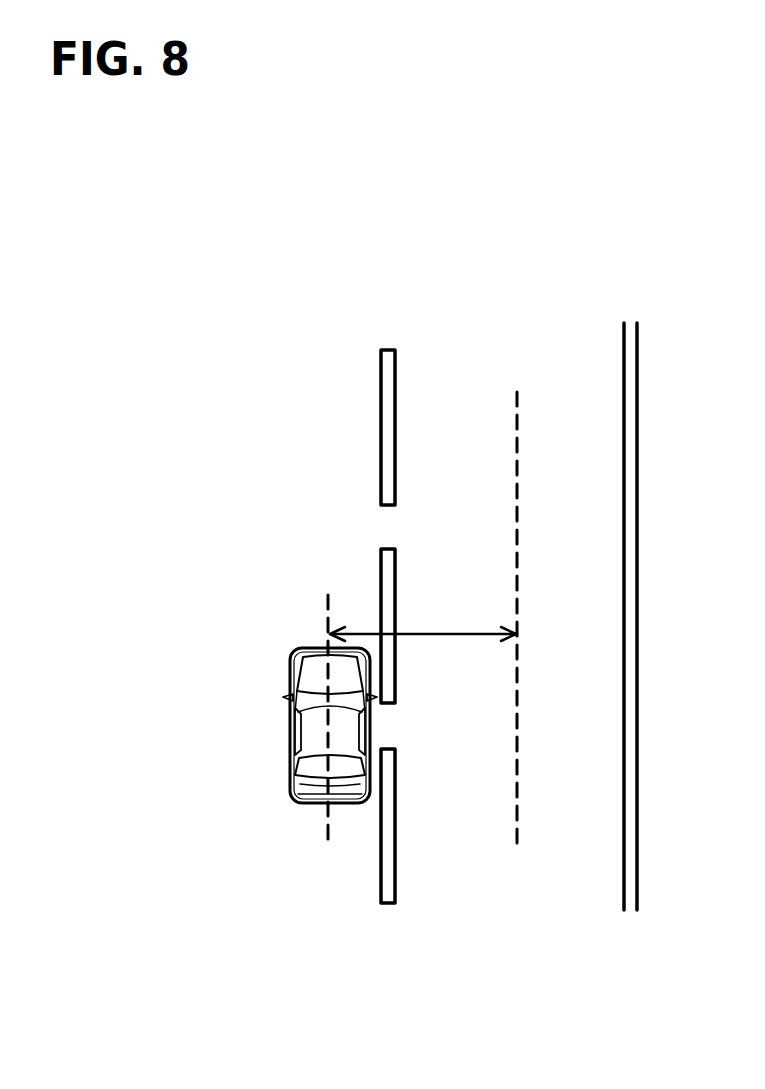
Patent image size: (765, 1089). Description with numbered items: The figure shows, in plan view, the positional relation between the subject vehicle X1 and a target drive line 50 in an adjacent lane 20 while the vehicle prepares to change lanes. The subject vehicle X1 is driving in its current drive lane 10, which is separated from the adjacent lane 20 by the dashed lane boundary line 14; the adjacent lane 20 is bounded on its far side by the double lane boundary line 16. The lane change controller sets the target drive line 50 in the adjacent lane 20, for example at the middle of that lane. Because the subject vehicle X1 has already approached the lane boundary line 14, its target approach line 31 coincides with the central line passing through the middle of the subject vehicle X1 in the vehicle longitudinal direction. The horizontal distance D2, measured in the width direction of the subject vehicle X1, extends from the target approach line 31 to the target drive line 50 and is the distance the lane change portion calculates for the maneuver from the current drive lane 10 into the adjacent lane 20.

The lane boundary line 14 is at (380, 410).
The lane boundary line 16 is at (639, 410).
The target drive line 50 is at (516, 445).
The target approach line 31 is at (326, 596).
The subject vehicle X1 is at (309, 649).
The horizontal distance D2 is at (423, 649).
The current drive lane 10 is at (285, 855).
The adjacent lane 20 is at (564, 855).